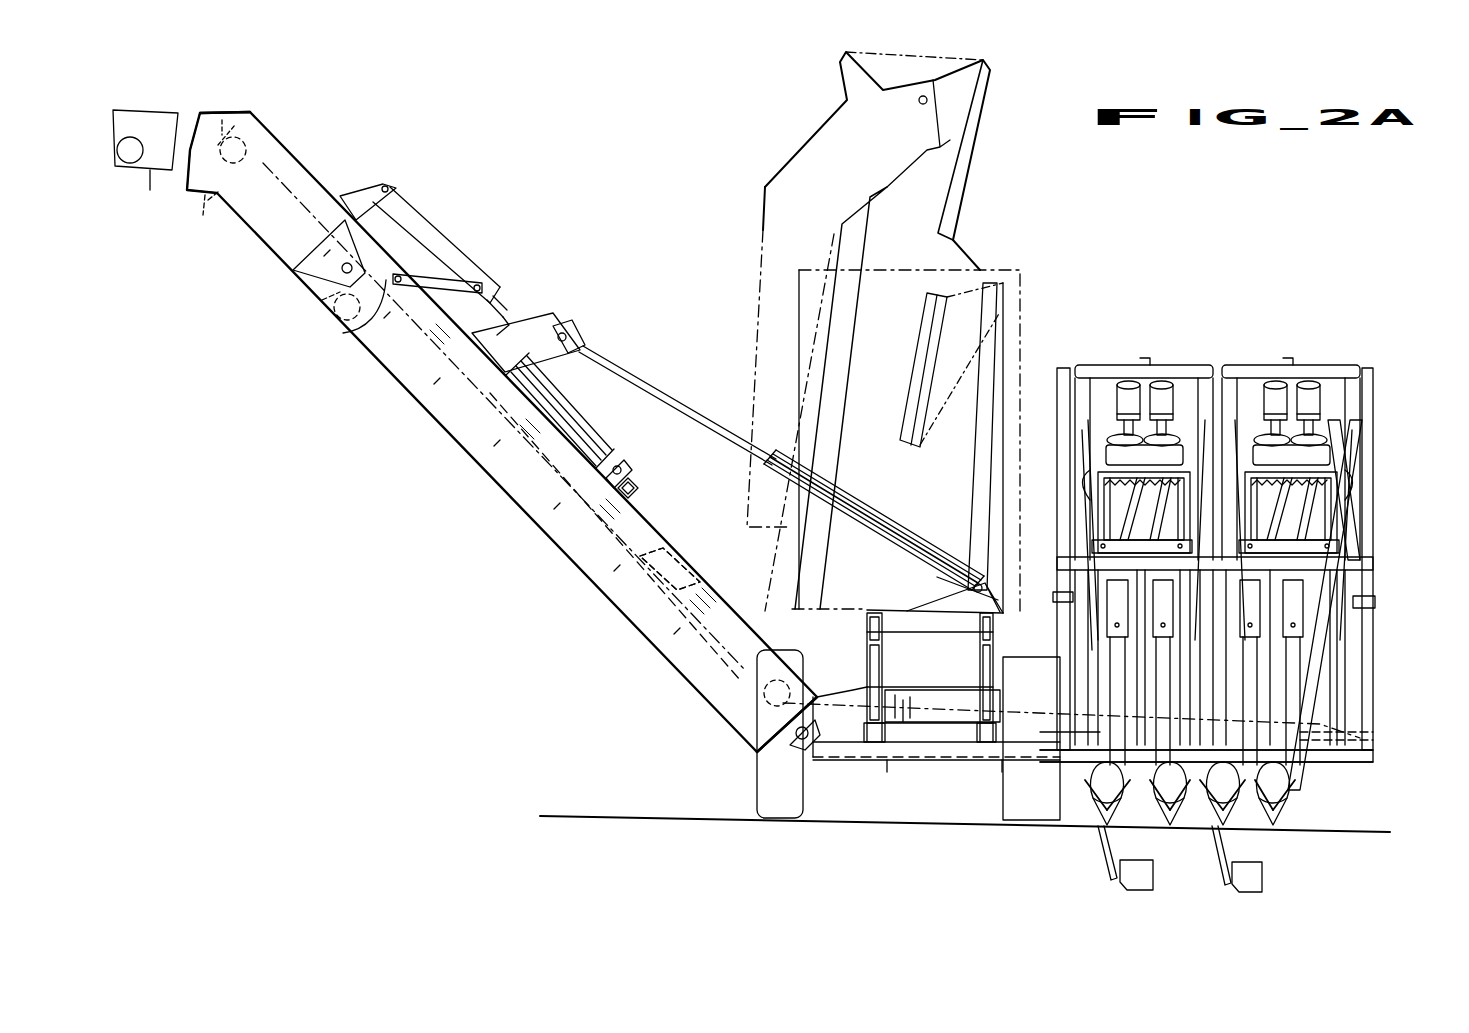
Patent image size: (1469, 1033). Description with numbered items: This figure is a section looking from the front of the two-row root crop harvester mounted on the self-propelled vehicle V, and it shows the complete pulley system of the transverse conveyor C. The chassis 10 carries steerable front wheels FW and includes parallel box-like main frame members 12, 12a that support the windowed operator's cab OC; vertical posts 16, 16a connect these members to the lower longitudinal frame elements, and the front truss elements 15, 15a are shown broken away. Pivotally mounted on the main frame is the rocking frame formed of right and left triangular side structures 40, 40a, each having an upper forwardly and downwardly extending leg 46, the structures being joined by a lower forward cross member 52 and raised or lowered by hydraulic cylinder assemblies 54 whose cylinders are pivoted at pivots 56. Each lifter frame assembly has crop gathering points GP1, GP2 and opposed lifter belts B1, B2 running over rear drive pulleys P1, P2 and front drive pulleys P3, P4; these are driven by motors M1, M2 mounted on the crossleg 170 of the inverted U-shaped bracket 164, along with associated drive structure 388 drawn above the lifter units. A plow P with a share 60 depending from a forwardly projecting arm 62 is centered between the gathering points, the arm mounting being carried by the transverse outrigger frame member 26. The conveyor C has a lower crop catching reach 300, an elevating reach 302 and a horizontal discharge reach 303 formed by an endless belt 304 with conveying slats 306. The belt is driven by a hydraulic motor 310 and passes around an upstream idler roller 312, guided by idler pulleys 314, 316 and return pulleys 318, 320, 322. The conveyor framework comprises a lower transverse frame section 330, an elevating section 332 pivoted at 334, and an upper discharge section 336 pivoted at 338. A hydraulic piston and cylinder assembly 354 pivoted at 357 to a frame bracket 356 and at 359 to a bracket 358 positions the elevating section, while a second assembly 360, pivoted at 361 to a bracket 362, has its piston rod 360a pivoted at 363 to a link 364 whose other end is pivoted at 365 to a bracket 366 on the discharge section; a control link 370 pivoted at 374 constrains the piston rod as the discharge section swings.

The horizontal discharge reach 303 is at (150, 132).
The hydraulic motor 310 is at (128, 163).
The idler pulleys 316 is at (265, 135).
The endless belt 304 is at (274, 170).
The direction changing pulleys 318 is at (188, 193).
The conveying slats 306 is at (283, 264).
The pivots 338 is at (323, 300).
The pulleys 320 is at (332, 303).
The pivot 374 is at (350, 330).
The elevating reach 302 is at (673, 547).
The link 364 is at (423, 250).
The pivot 365 is at (373, 204).
The bracket 366 is at (370, 210).
The control link 370 is at (437, 277).
The pivot 363 is at (483, 286).
The bracket 358 is at (547, 318).
The pivot 359 is at (568, 337).
The piston rod 360a is at (505, 307).
The pivot 361 is at (622, 468).
The bracket 362 is at (636, 490).
The hydraulic piston and cylinder assembly 360 is at (600, 440).
The hydraulic piston and cylinder assembly 354 is at (973, 455).
The pivot 357 is at (937, 575).
The bracket 356 is at (933, 600).
The upper discharge section 336 is at (790, 165).
The transverse conveyor C is at (813, 147).
The operator's cab OC is at (1013, 270).
The upper leg 46 is at (1057, 447).
The chassis 10 is at (904, 651).
The main frame member 12 is at (860, 623).
The main frame member 12a is at (978, 643).
The vertical post 16 is at (868, 657).
The vertical post 16a is at (980, 667).
The crop catching reach 300 is at (940, 703).
The front truss element 15 is at (936, 735).
The front truss element 15a is at (974, 771).
The idler pulleys 314 is at (750, 688).
The pulleys 322 is at (747, 753).
The pivots 334 is at (793, 745).
The self-propelled vehicle V is at (752, 770).
The steerable front wheels FW is at (757, 790).
The lifter belt B2 is at (1057, 623).
The hydraulic cylinder assemblies 54 is at (1052, 663).
The right side triangular frame structure 40 is at (1057, 365).
The left side triangular frame structure 40a is at (1373, 370).
The hydraulic motor M2 is at (1127, 383).
The motor M1 is at (1164, 383).
The drive housing 388 is at (1330, 448).
The inverted U-shaped bracket 164 is at (1330, 452).
The crossleg 170 is at (1323, 463).
The rear drive pulley P1 is at (1353, 497).
The rear drive pulley P2 is at (1080, 493).
The lower forward cross member 52 is at (1350, 562).
The pivots 56 is at (1375, 602).
The lifter belt B1 is at (1332, 630).
The lower transverse frame section 330 is at (1338, 695).
The idler roller 312 is at (1357, 735).
The transverse outrigger frame member 26 is at (1370, 755).
The crop gathering point GP1 is at (1273, 778).
The crop gathering point GP2 is at (1233, 793).
The front drive pulley P3 is at (1293, 807).
The front drive pulley P4 is at (1103, 810).
The forwardly projecting arm 62 is at (1103, 843).
The plow share 60 is at (1233, 882).
The plow P is at (1103, 875).
The elevating section 332 is at (633, 622).